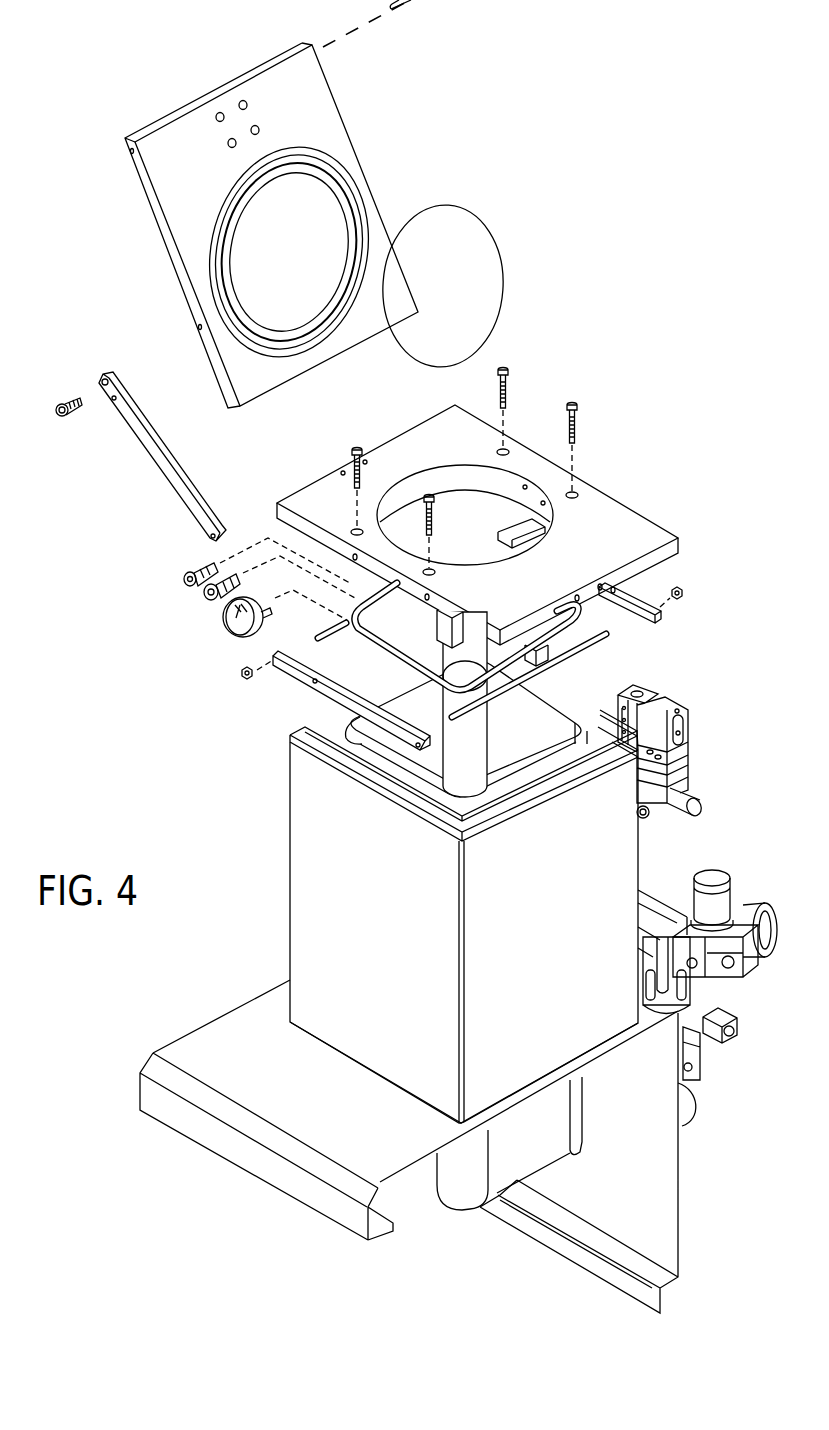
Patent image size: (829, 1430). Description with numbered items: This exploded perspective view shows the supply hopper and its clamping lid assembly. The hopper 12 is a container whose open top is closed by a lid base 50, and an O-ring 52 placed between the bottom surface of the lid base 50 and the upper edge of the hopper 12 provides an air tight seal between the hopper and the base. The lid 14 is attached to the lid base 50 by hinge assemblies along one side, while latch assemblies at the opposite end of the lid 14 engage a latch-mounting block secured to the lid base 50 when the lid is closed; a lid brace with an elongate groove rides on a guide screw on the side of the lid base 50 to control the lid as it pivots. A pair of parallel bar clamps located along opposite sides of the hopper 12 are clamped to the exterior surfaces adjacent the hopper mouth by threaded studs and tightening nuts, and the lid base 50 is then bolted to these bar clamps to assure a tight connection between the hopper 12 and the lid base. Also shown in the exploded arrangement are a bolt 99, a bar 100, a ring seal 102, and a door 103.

The hopper 12 is at (533, 747).
The lid 14 is at (271, 229).
The lid base 50 is at (477, 507).
The O-ring 52 is at (390, 657).
The bolt 99 is at (352, 453).
The bar 100 is at (313, 677).
The ring seal 102 is at (318, 182).
The door 103 is at (278, 87).